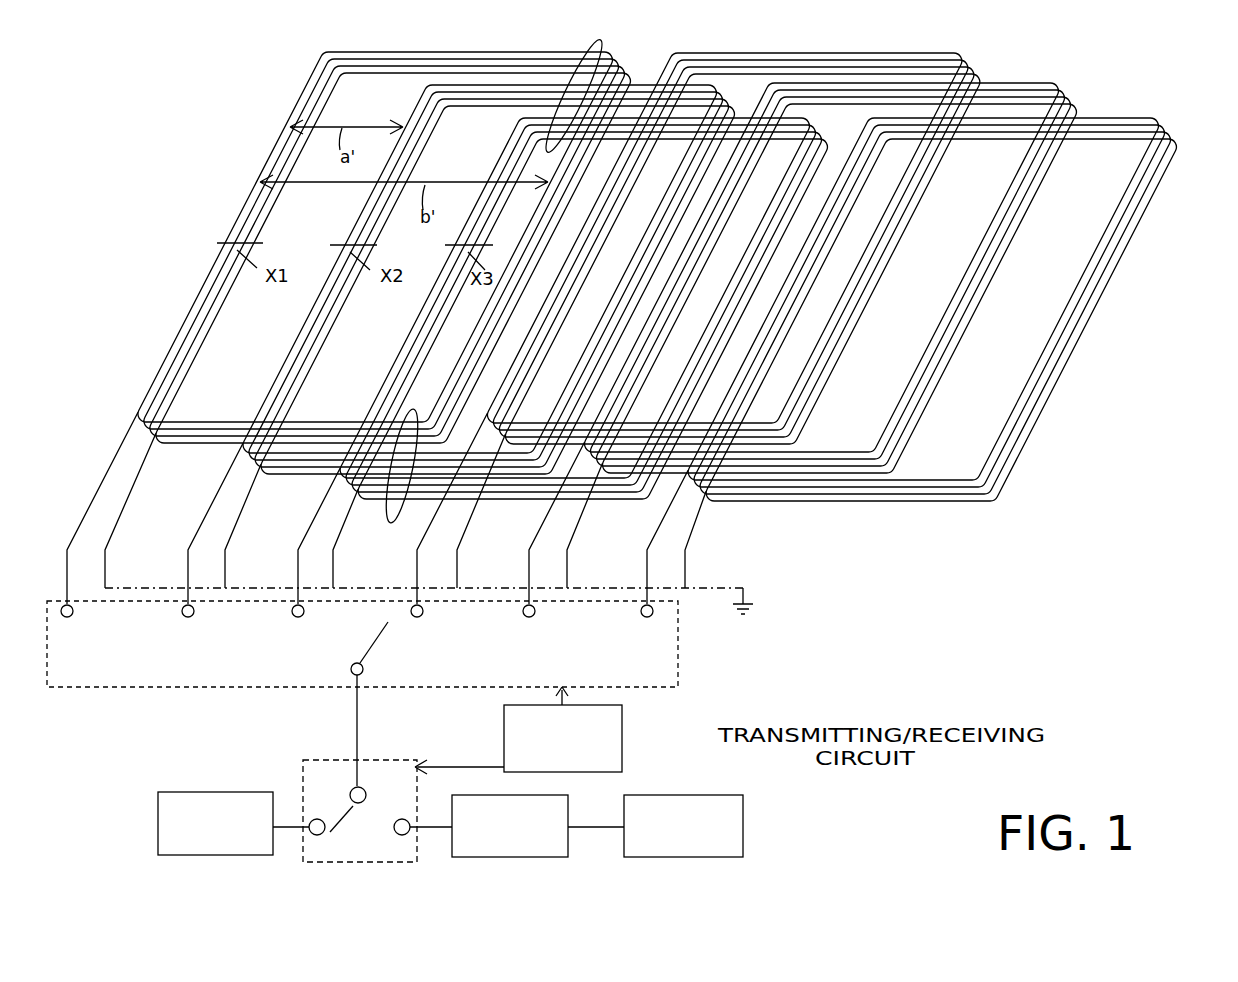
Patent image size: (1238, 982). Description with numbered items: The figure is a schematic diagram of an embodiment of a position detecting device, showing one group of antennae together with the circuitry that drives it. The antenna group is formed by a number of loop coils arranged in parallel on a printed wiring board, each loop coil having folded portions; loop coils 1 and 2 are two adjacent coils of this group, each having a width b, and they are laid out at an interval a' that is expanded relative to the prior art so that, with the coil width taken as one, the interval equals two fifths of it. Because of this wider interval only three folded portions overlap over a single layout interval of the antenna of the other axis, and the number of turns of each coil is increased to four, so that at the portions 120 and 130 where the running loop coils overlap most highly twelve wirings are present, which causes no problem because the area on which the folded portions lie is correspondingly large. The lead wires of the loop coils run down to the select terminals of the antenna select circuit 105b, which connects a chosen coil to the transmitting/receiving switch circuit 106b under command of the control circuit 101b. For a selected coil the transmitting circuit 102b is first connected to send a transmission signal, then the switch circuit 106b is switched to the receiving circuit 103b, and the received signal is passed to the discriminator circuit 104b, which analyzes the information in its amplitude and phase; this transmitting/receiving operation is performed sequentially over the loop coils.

The loop coil 1 is at (392, 53).
The loop coil 2 is at (496, 106).
The most highly overlapping portion 120 is at (597, 43).
The most highly overlapping portion 130 is at (390, 523).
The control circuit 101b is at (622, 741).
The transmitting circuit 102b is at (195, 792).
The receiving circuit 103b is at (502, 857).
The discriminator circuit 104b is at (743, 842).
The antenna select circuit 105b is at (68, 687).
The transmitting/receiving switch circuit 106b is at (385, 758).